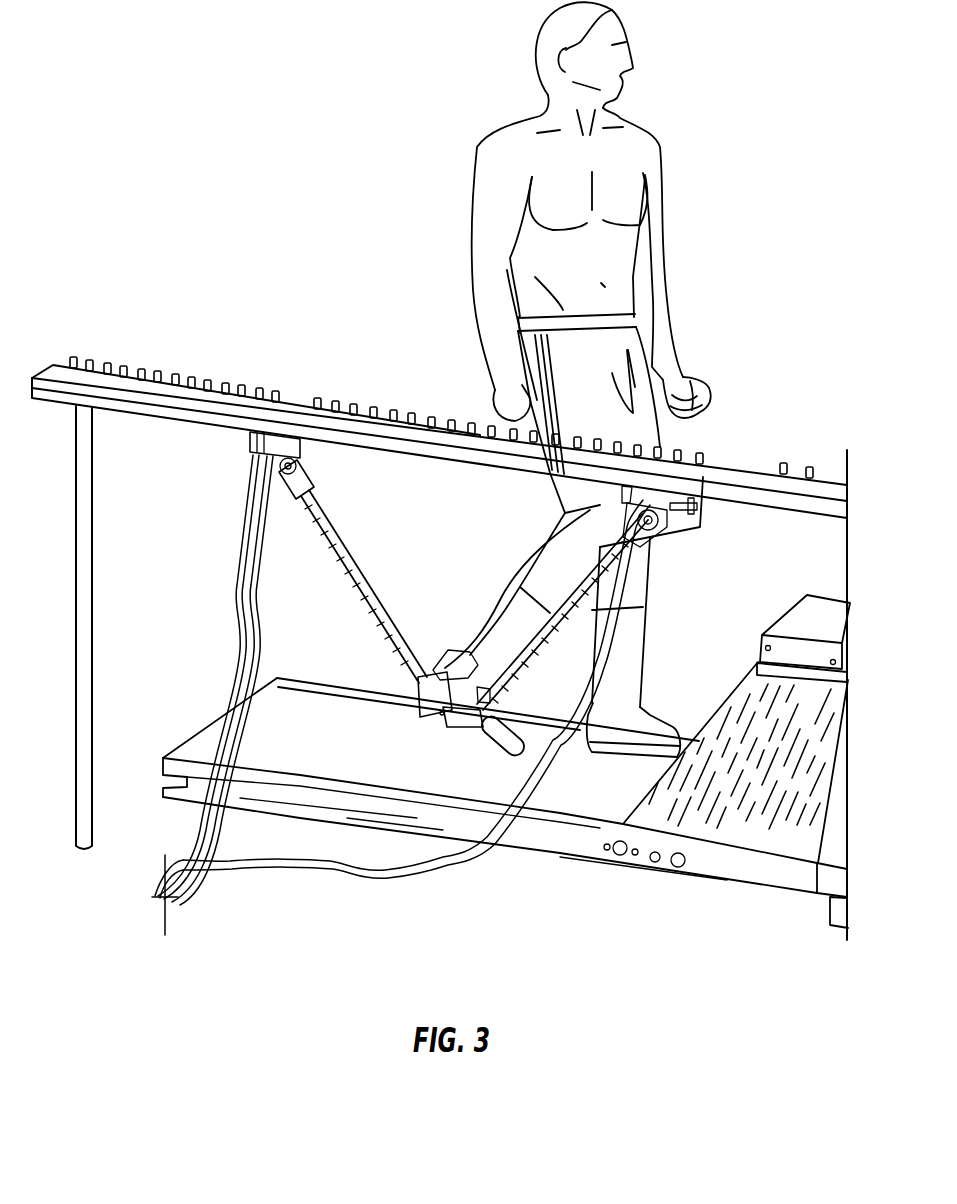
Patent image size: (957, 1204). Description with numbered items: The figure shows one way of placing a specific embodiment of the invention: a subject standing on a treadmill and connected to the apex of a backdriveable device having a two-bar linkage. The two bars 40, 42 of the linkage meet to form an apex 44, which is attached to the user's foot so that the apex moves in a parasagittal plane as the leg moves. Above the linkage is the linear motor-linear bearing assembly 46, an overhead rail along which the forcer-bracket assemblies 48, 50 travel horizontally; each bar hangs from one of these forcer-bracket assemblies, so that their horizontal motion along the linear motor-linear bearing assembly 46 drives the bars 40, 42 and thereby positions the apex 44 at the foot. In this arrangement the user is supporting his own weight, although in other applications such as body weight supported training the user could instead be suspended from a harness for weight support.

The bar 40 is at (362, 568).
The bar 42 is at (517, 687).
The apex 44 is at (452, 747).
The linear motor-linear bearing assembly 46 is at (290, 394).
The forcer-bracket assembly 48 is at (695, 507).
The forcer-bracket assembly 50 is at (265, 450).